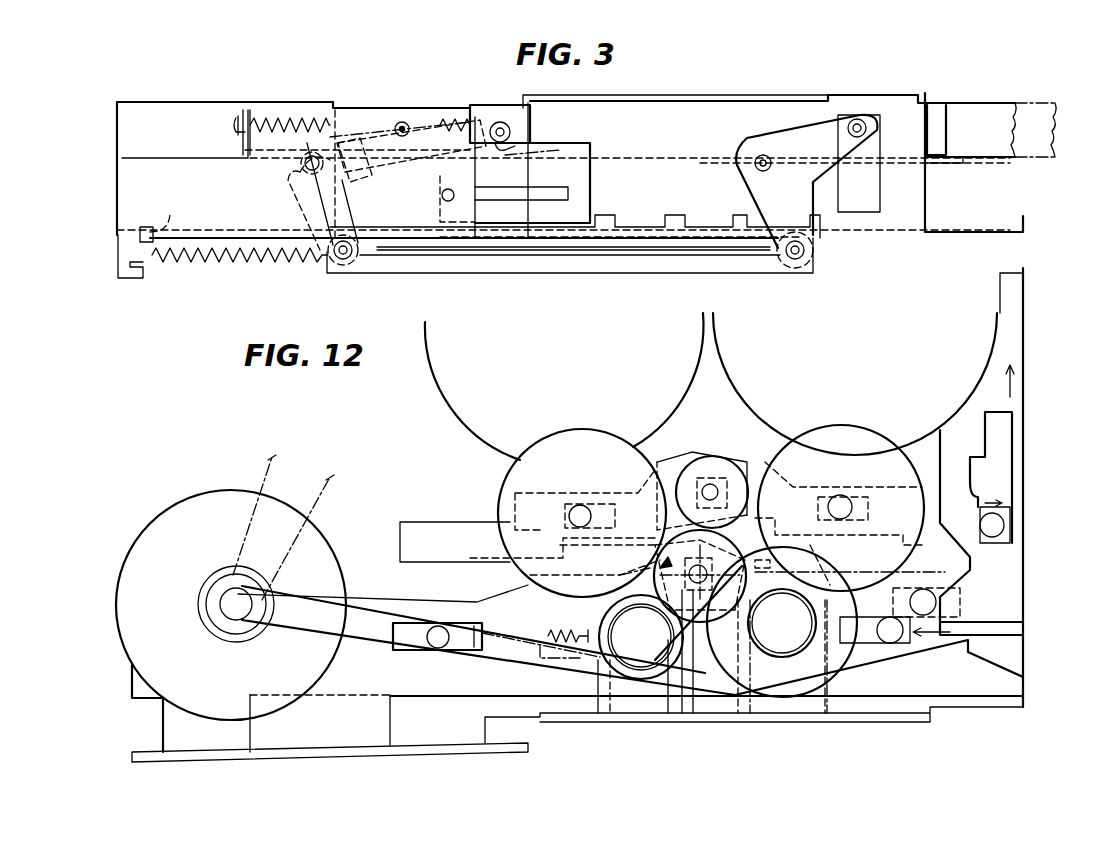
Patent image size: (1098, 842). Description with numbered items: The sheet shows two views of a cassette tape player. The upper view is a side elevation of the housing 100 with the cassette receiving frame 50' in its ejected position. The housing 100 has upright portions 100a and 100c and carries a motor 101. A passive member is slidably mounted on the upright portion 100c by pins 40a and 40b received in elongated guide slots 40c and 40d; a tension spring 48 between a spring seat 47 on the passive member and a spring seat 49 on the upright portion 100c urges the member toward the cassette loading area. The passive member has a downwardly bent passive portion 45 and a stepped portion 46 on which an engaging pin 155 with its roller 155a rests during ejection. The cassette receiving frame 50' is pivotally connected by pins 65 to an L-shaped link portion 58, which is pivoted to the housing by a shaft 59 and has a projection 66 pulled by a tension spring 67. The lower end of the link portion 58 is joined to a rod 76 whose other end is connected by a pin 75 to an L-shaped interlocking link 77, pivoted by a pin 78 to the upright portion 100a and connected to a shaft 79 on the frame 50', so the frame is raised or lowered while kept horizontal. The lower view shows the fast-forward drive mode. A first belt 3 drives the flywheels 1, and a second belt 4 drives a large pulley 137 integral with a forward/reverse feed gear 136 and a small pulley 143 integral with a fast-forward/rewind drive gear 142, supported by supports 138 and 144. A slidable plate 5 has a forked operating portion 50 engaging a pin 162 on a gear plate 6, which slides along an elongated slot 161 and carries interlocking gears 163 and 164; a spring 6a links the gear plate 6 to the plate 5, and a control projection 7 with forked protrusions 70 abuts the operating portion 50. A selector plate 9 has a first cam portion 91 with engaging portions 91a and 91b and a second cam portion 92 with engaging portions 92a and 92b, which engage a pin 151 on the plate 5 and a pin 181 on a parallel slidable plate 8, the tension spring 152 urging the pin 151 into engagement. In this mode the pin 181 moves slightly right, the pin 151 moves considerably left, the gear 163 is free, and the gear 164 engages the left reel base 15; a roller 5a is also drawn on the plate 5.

In FIG. 3, the housing 100 is at (150, 221).
In FIG. 3, the upright portion 100a is at (745, 112).
In FIG. 3, the upright portion 100c is at (185, 170).
In FIG. 3, the motor 101 is at (213, 113).
In FIG. 12, the motor 101 is at (192, 521).
In FIG. 3, the spring seat 47 is at (241, 122).
In FIG. 3, the pin 40a is at (284, 118).
In FIG. 3, the shaft 59 is at (313, 156).
In FIG. 3, the tension spring 48 is at (338, 123).
In FIG. 3, the elongated guide slot 40c is at (393, 128).
In FIG. 3, the pin 65 is at (407, 121).
In FIG. 3, the spring seat 49 is at (476, 126).
In FIG. 3, the engaging pin 155 is at (503, 125).
In FIG. 3, the roller 155a is at (512, 145).
In FIG. 3, the passive portion 45 is at (507, 155).
In FIG. 3, the stepped portion 46 is at (582, 150).
In FIG. 3, the operating portion 50 is at (700, 87).
In FIG. 12, the operating portion 50 is at (773, 511).
In FIG. 3, the cassette receiving frame 50' is at (953, 176).
In FIG. 3, the L-shaped interlocking link 77 is at (805, 125).
In FIG. 3, the pin 78 is at (763, 163).
In FIG. 3, the shaft 79 is at (858, 120).
In FIG. 3, the pin 75 is at (813, 252).
In FIG. 3, the rod 76 is at (617, 262).
In FIG. 3, the link portion 58 is at (313, 213).
In FIG. 3, the projection 66 is at (345, 262).
In FIG. 3, the tension spring 67 is at (232, 266).
In FIG. 3, the pin 40b is at (442, 195).
In FIG. 3, the elongated guide slot 40d is at (510, 200).
In FIG. 3, the selector plate 9 is at (1023, 270).
In FIG. 12, the flywheel 1 is at (440, 368).
In FIG. 12, the reel base 15 is at (576, 432).
In FIG. 12, the slidable plate 8 is at (515, 492).
In FIG. 12, the elongated slot 161 is at (690, 466).
In FIG. 12, the pin 162 is at (710, 484).
In FIG. 12, the interlocking gear 163 is at (735, 470).
In FIG. 12, the gear plate 6 is at (672, 520).
In FIG. 12, the spring 6a is at (765, 563).
In FIG. 12, the control projection 7 is at (700, 612).
In FIG. 12, the interlocking gear 164 is at (655, 540).
In FIG. 12, the forked protrusion 70 is at (640, 588).
In FIG. 12, the pulley 143 is at (605, 622).
In FIG. 12, the forward/reverse feed gear 136 is at (785, 652).
In FIG. 12, the first belt 3 is at (262, 463).
In FIG. 12, the second belt 4 is at (470, 653).
In FIG. 12, the slidable plate 5 is at (565, 700).
In FIG. 12, the roller 5a is at (430, 645).
In FIG. 12, the tension spring 152 is at (548, 636).
In FIG. 12, the fast-forward/rewind drive gear 142 is at (635, 700).
In FIG. 12, the support 144 is at (668, 702).
In FIG. 12, the support 138 is at (815, 680).
In FIG. 12, the pulley 137 is at (852, 666).
In FIG. 12, the first cam portion 91 is at (985, 575).
In FIG. 12, the engaging portion 91a is at (1007, 483).
In FIG. 12, the engaging portion 91b is at (985, 628).
In FIG. 12, the second cam portion 92 is at (1012, 460).
In FIG. 12, the engaging portion 92a is at (1005, 430).
In FIG. 12, the engaging portion 92b is at (1003, 500).
In FIG. 12, the pin 181 is at (1000, 525).
In FIG. 12, the pin 151 is at (938, 603).